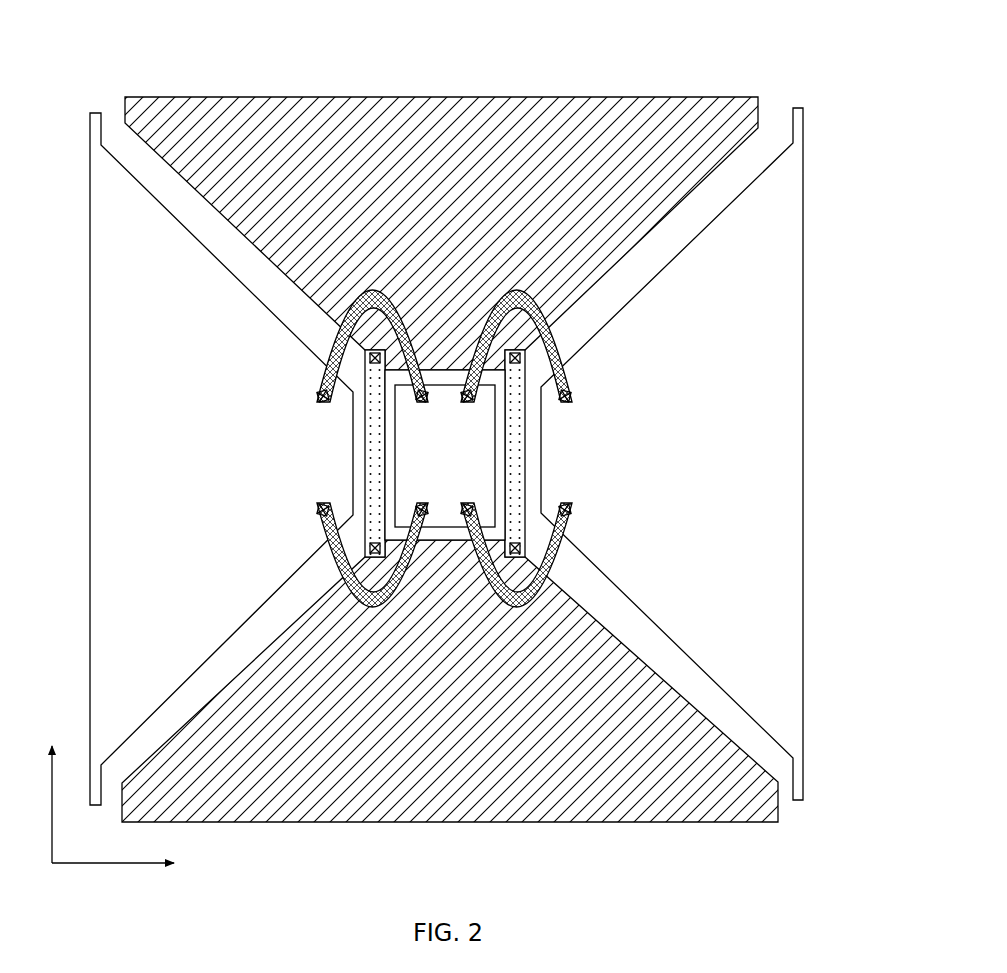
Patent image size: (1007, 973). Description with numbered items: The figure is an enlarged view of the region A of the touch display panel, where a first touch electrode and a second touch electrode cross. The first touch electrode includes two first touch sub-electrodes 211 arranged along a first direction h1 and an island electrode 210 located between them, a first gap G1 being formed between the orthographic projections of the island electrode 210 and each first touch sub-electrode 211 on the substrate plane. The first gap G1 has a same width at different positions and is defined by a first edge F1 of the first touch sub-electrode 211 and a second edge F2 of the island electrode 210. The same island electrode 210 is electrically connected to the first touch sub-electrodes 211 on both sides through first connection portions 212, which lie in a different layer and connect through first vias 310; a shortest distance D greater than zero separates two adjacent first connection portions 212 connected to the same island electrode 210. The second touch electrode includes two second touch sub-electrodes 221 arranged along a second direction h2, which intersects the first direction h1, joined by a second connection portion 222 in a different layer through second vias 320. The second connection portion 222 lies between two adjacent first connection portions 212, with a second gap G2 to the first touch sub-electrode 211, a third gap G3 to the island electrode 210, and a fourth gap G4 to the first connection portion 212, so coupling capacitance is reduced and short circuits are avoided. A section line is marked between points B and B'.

The island electrode 210 is at (445, 408).
The first touch sub-electrode 211 is at (112, 379).
The first connection portion 212 is at (321, 230).
The second touch sub-electrode 221 is at (221, 118).
The second connection portion 222 is at (375, 447).
The first via 310 is at (313, 398).
The second via 320 is at (375, 550).
The first gap G1 is at (530, 460).
The second gap G2 is at (360, 474).
The third gap G3 is at (392, 484).
The fourth gap G4 is at (378, 335).
The first edge F1 is at (543, 423).
The second edge F2 is at (496, 493).
The shortest distance D is at (433, 503).
The section line end B is at (327, 421).
The section line end B' is at (432, 422).
The region A is at (797, 21).
The first direction h1 is at (131, 865).
The second direction h2 is at (51, 791).